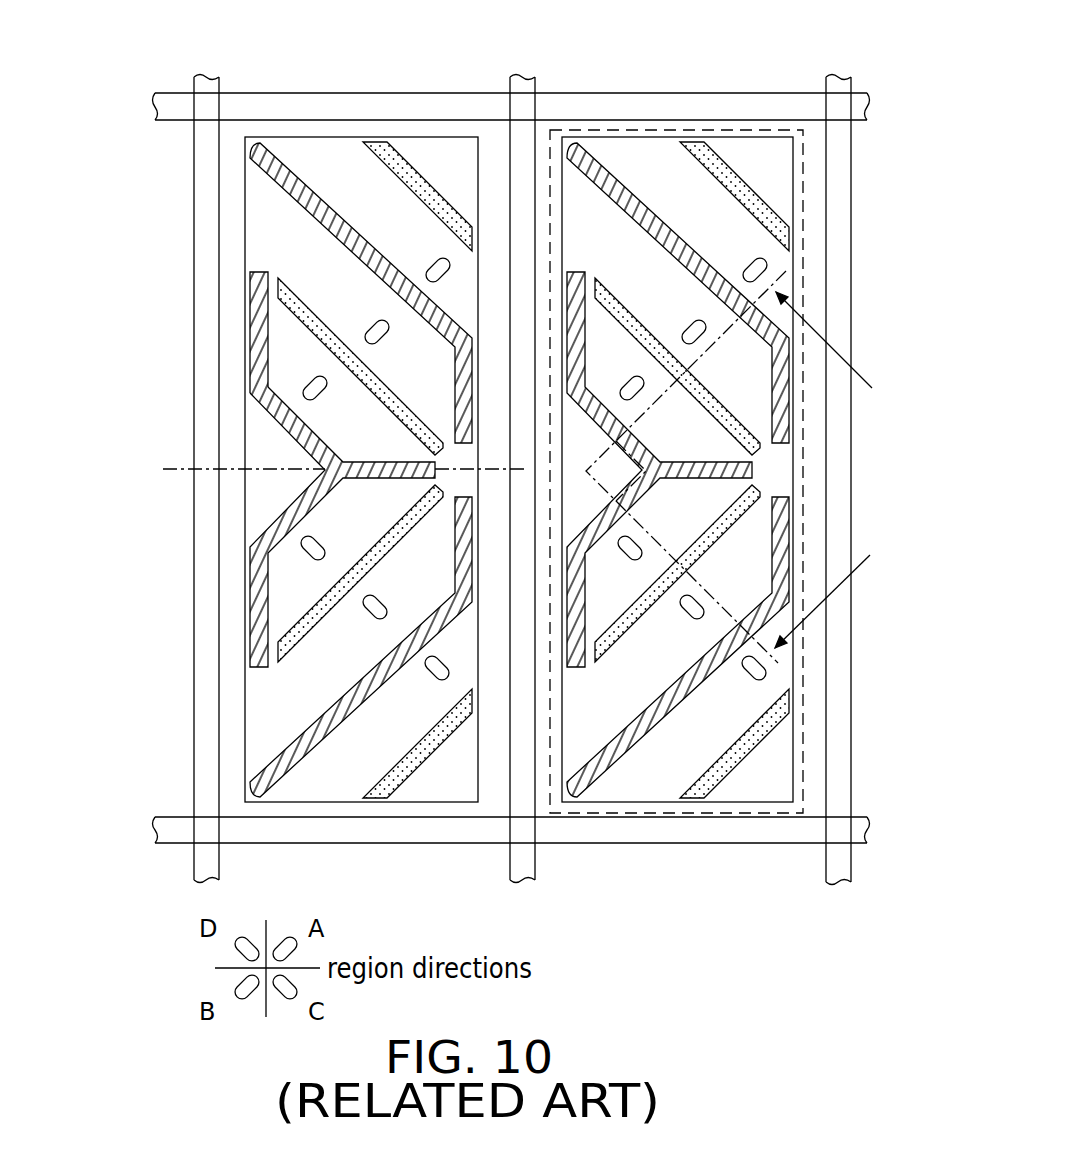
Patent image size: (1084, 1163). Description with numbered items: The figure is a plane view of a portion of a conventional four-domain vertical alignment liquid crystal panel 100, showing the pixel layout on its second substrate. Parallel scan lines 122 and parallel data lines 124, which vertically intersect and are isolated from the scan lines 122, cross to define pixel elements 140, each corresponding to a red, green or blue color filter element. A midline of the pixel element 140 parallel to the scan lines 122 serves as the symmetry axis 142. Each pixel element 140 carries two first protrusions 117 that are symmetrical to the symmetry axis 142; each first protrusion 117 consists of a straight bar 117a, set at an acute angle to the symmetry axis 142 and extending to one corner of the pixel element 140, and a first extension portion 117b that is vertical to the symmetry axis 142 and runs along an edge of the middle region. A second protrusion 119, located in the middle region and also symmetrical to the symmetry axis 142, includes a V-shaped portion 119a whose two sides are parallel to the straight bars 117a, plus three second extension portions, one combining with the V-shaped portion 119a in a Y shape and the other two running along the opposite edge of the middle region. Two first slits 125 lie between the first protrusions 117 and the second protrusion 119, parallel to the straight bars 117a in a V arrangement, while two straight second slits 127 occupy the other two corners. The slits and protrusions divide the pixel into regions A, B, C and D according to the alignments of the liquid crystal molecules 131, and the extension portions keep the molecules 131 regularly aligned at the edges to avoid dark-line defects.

The four-domain vertical alignment liquid crystal panel 100 is at (466, 32).
The first protrusion 117 is at (650, 172).
The straight bar 117a is at (687, 255).
The first extension portion 117b is at (780, 407).
The second protrusion 119 is at (115, 275).
The V-shaped portion 119a is at (273, 403).
The scan line 122 is at (175, 828).
The data line 124 is at (202, 777).
The first slit 125 is at (753, 447).
The second slit 127 is at (745, 193).
The liquid crystal molecule 131 is at (766, 267).
The pixel element 140 is at (640, 128).
The symmetry axis 142 is at (177, 470).